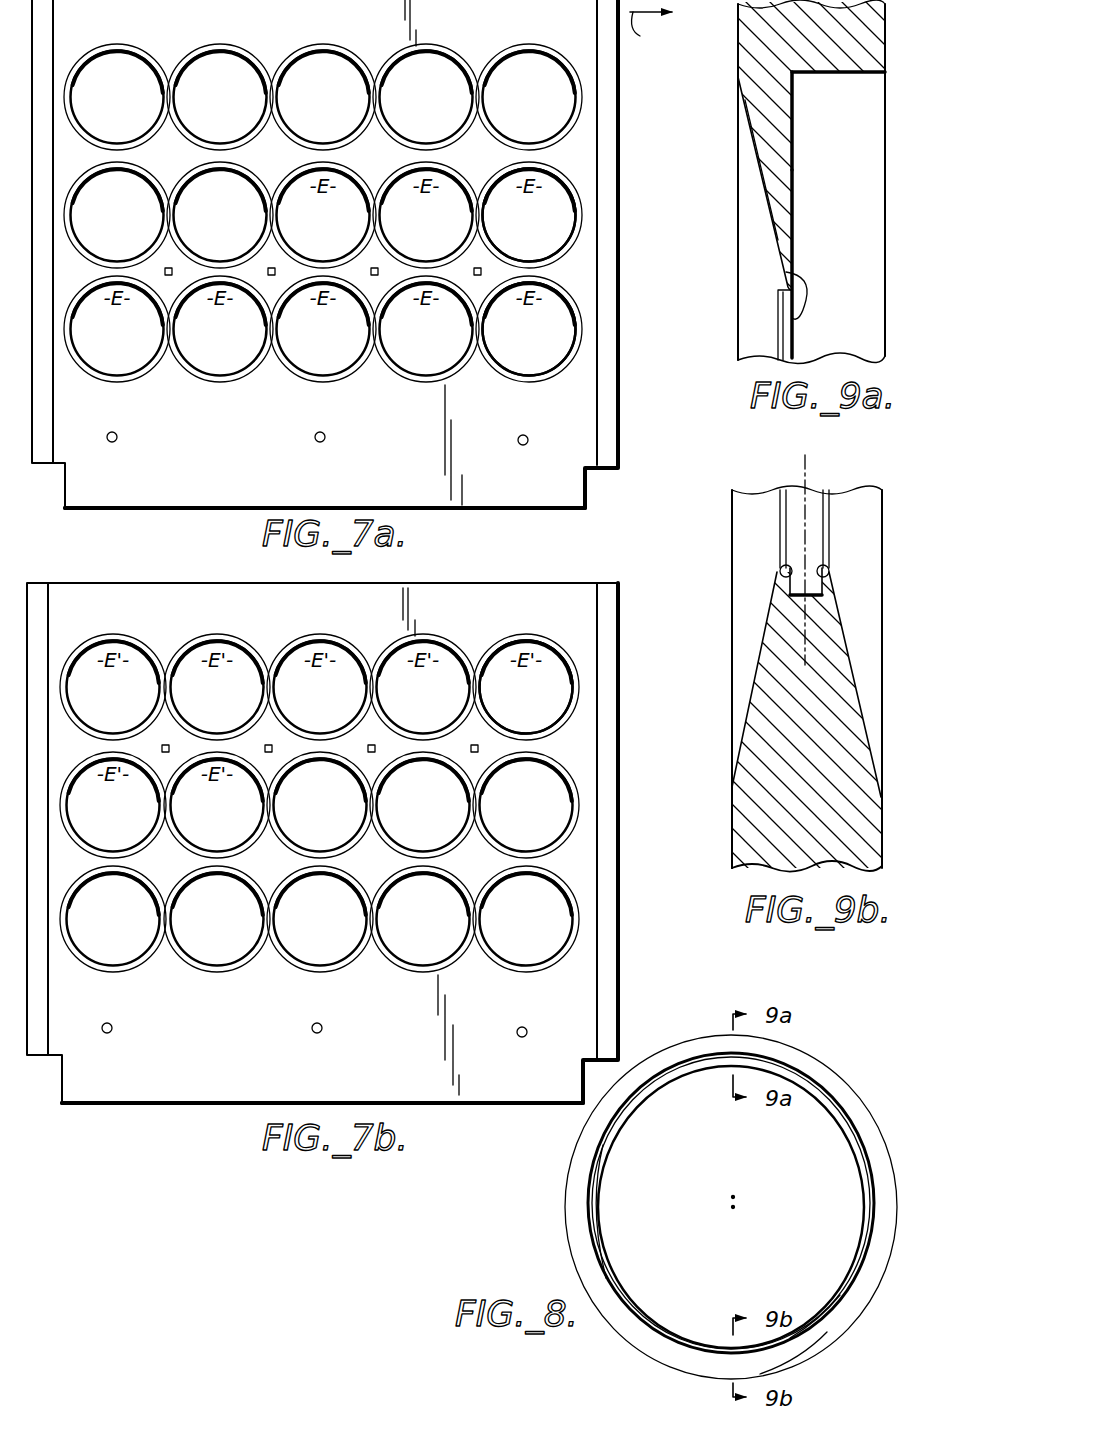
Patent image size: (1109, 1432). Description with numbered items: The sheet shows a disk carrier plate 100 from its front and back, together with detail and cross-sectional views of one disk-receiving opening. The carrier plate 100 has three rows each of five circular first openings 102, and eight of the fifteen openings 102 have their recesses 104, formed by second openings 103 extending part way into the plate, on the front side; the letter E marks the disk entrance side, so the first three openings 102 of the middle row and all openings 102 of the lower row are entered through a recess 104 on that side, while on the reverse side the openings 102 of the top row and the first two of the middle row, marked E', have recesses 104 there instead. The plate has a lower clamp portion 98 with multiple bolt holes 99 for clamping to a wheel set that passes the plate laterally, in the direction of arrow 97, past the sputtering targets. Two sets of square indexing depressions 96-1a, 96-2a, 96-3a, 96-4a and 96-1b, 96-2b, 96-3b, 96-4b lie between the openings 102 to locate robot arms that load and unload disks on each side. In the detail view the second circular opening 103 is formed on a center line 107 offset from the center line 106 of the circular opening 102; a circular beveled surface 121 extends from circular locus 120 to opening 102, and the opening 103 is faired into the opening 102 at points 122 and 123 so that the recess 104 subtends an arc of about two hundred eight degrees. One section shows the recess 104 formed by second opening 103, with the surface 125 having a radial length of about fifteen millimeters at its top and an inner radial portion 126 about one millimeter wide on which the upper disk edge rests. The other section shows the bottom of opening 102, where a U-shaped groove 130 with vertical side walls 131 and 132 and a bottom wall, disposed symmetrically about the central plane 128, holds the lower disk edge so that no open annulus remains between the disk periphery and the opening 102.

In FIG. 7A, the square indexing depression 96-1a is at (477, 267).
In FIG. 7A, the square indexing depression 96-2a is at (374, 267).
In FIG. 7A, the square indexing depression 96-3a is at (271, 267).
In FIG. 7A, the square indexing depression 96-4a is at (168, 267).
In FIG. 7B, the square indexing depression 96-1b is at (165, 744).
In FIG. 7B, the square indexing depression 96-2b is at (268, 744).
In FIG. 7B, the square indexing depression 96-3b is at (371, 744).
In FIG. 7B, the square indexing depression 96-4b is at (474, 744).
In FIG. 7A, the arrow 97 is at (651, 31).
In FIG. 7A, the lower clamp portion 98 is at (568, 490).
In FIG. 7B, the lower clamp portion 98 is at (486, 1088).
In FIG. 7A, the bolt holes 99 is at (528, 436).
In FIG. 7B, the bolt holes 99 is at (527, 1029).
In FIG. 7A, the carrier plate 100 is at (623, 81).
In FIG. 7B, the carrier plate 100 is at (601, 586).
In FIG. 9A, the carrier plate 100 is at (811, 182).
In FIG. 9B, the carrier plate 100 is at (887, 830).
In FIG. 7A, the first opening 102 is at (566, 232).
In FIG. 7B, the first opening 102 is at (568, 808).
In FIG. 9A, the first opening 102 is at (776, 293).
In FIG. 9B, the first opening 102 is at (826, 570).
In FIG. 8, the first opening 102 is at (848, 1138).
In FIG. 7A, the second opening 103 is at (578, 302).
In FIG. 7B, the second opening 103 is at (576, 656).
In FIG. 9A, the second opening 103 is at (866, 76).
In FIG. 8, the second opening 103 is at (787, 1060).
In FIG. 7A, the recess 104 is at (574, 357).
In FIG. 7B, the recess 104 is at (576, 704).
In FIG. 9A, the recess 104 is at (793, 208).
In FIG. 8, the recess 104 is at (826, 1098).
In FIG. 8, the center line 106 is at (733, 1207).
In FIG. 8, the center line 107 is at (733, 1197).
In FIG. 7A, the circular locus 120 is at (574, 192).
In FIG. 9A, the circular locus 120 is at (740, 79).
In FIG. 9B, the circular locus 120 is at (732, 789).
In FIG. 8, the circular locus 120 is at (891, 1168).
In FIG. 7A, the circular beveled surface 121 is at (578, 132).
In FIG. 9A, the circular beveled surface 121 is at (760, 190).
In FIG. 9B, the circular beveled surface 121 is at (753, 712).
In FIG. 8, the circular beveled surface 121 is at (826, 1331).
In FIG. 8, the fairing point 122 is at (840, 1295).
In FIG. 8, the fairing point 123 is at (607, 1273).
In FIG. 9A, the surface 125 is at (793, 143).
In FIG. 9A, the inner radial portion 126 is at (792, 305).
In FIG. 9B, the central plane 128 is at (812, 471).
In FIG. 9B, the U-shaped groove 130 is at (812, 543).
In FIG. 9B, the vertical side wall 131 is at (783, 564).
In FIG. 9B, the vertical side wall 132 is at (816, 562).